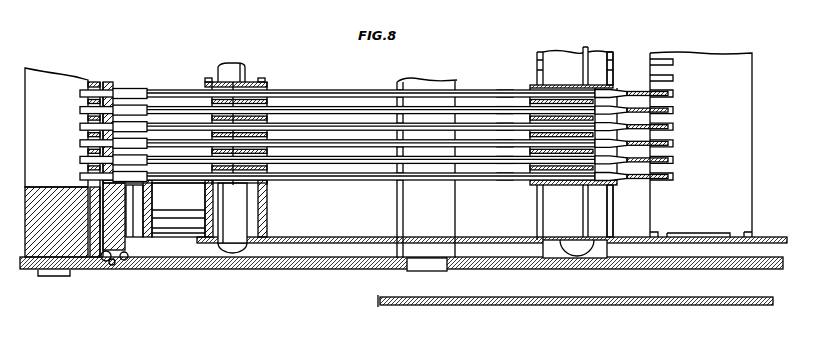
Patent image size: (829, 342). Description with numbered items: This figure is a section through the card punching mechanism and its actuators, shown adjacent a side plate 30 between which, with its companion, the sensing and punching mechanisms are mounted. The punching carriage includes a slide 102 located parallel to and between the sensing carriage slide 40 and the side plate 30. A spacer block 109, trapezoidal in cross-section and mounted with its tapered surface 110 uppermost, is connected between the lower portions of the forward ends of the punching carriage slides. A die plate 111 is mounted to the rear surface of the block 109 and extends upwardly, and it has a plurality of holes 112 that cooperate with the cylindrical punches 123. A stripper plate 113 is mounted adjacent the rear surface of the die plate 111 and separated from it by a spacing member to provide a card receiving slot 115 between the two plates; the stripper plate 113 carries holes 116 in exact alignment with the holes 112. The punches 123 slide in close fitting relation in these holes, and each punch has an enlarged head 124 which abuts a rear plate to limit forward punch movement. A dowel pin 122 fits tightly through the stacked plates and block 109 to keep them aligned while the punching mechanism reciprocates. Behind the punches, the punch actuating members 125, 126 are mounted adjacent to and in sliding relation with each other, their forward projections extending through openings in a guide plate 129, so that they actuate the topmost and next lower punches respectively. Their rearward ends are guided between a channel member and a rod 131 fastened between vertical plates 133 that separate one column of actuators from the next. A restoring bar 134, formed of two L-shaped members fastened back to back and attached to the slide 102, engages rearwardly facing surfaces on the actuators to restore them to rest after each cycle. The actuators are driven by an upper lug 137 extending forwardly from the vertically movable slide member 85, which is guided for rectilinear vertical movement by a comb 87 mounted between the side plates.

The tapered surface 110 is at (68, 82).
The spacer block 109 is at (33, 253).
The die plate 111 is at (98, 261).
The stripper plate 113 is at (125, 268).
The card receiving slot 115 is at (112, 268).
The holes 112 is at (88, 122).
The holes 116 is at (88, 168).
The dowel pin 122 is at (166, 227).
The cylindrical punches 123 is at (174, 106).
The enlarged head 124 is at (233, 85).
The guide plate 129 is at (263, 82).
The punch actuating member 126 is at (307, 107).
The punch actuating member 125 is at (343, 112).
The side plate 30 is at (360, 221).
The restoring bar 134 is at (448, 218).
The vertical plates 133 is at (537, 85).
The rod 131 is at (586, 33).
The upper lug 137 is at (620, 82).
The slide member 85 is at (643, 75).
The comb 87 is at (720, 131).
The slide 102 is at (167, 270).
The slide member 40 is at (485, 305).